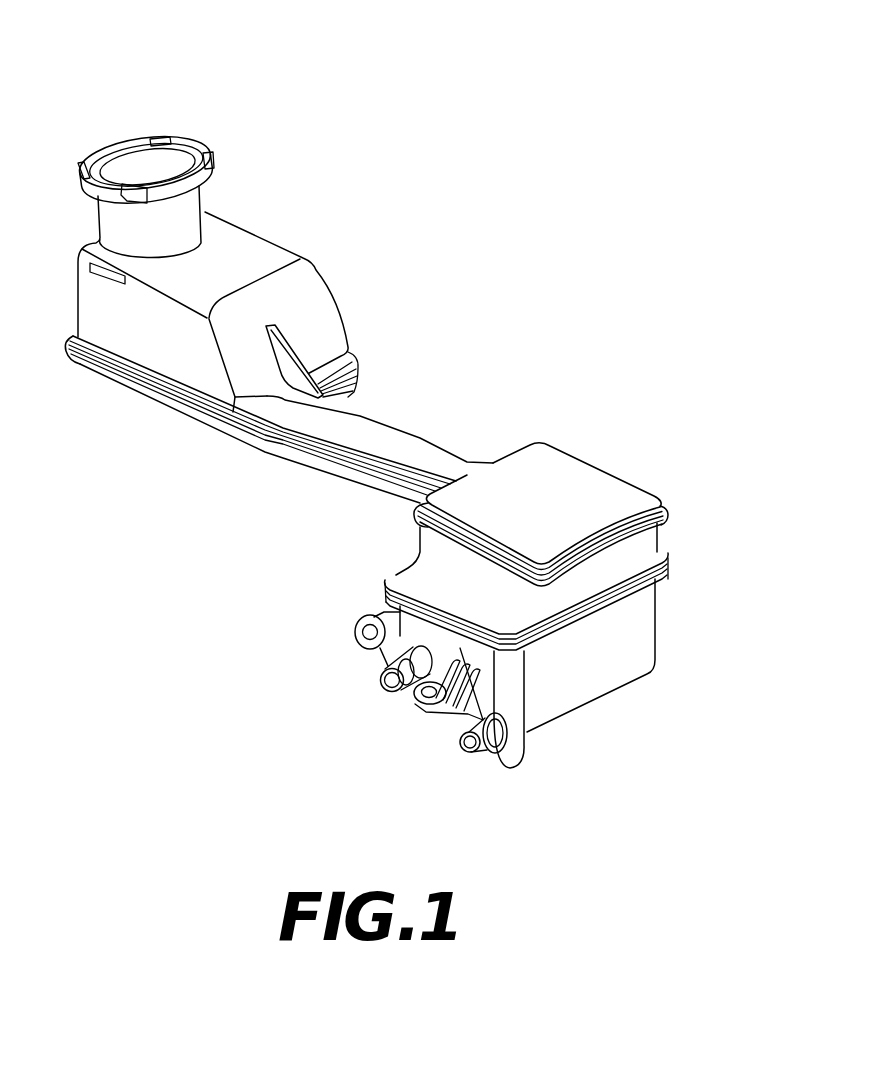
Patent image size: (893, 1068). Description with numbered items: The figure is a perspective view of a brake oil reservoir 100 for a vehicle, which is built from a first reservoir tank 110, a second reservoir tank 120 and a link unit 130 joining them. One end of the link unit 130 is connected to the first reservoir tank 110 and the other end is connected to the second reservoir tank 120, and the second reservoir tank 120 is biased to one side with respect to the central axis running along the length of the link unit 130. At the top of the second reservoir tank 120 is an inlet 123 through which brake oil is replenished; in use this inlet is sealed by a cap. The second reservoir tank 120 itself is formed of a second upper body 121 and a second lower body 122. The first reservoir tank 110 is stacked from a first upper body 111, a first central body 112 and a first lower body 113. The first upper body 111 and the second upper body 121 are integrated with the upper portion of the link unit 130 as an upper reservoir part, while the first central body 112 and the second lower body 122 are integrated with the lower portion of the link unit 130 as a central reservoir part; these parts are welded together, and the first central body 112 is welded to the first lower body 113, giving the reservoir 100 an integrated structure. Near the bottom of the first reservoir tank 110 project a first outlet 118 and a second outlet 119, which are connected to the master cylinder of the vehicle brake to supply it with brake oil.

The brake oil reservoir 100 is at (110, 33).
The first reservoir tank 110 is at (648, 468).
The first upper body 111 is at (581, 470).
The first central body 112 is at (653, 539).
The first lower body 113 is at (650, 628).
The first outlet 118 is at (384, 671).
The second outlet 119 is at (485, 747).
The second reservoir tank 120 is at (263, 158).
The second upper body 121 is at (280, 252).
The second lower body 122 is at (160, 404).
The inlet 123 is at (157, 163).
The link unit 130 is at (443, 410).